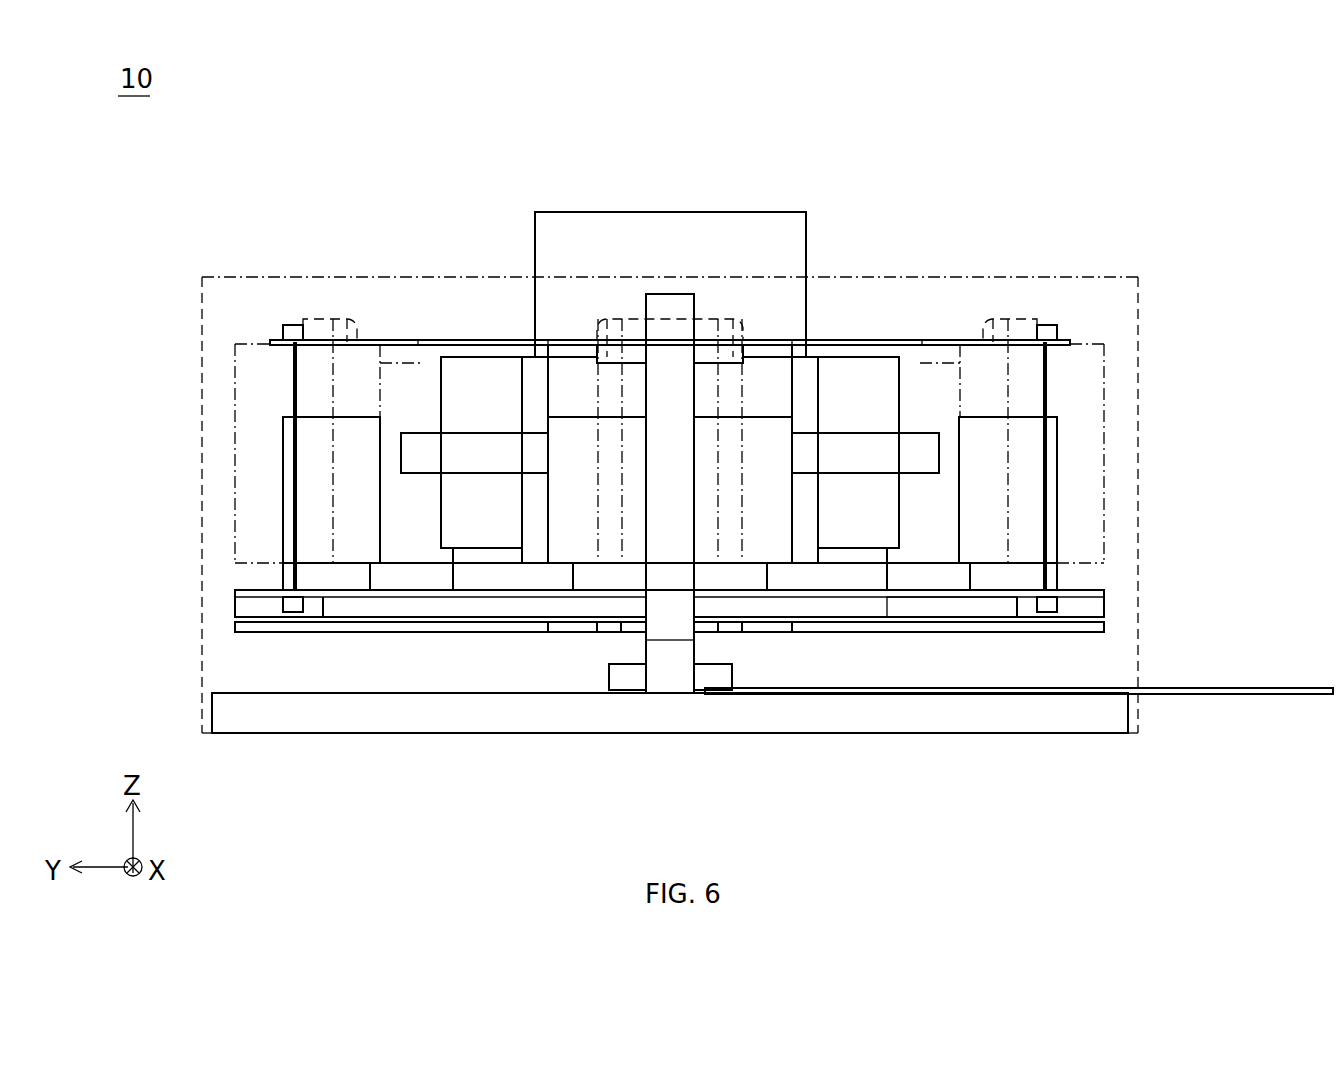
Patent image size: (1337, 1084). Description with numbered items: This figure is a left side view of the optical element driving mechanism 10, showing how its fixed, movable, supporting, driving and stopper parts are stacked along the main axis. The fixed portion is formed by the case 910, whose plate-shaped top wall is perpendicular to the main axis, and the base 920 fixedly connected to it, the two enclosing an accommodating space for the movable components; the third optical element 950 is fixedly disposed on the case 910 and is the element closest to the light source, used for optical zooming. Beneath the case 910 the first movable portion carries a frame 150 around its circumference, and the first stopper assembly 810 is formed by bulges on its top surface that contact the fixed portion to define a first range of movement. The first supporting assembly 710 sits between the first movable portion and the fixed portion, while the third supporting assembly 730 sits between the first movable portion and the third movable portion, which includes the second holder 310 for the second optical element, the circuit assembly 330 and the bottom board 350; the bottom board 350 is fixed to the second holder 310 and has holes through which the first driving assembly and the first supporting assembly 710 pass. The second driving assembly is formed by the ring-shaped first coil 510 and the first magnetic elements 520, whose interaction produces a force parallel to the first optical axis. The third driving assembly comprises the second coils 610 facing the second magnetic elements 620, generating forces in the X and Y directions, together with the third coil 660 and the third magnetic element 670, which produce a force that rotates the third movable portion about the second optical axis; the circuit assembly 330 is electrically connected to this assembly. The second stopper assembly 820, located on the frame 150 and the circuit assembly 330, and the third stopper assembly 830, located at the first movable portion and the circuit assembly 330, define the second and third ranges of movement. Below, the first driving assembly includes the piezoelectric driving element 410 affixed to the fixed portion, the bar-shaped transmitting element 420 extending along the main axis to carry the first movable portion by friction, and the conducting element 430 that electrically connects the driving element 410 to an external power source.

The optical element driving mechanism 10 is at (136, 79).
The case 910 is at (222, 277).
The third optical element 950 is at (668, 225).
The first supporting assembly 710 is at (676, 325).
The first stopper assembly 810 is at (318, 330).
The frame 150 is at (398, 357).
The second stopper assembly 820 is at (460, 357).
The first coil 510 is at (870, 448).
The third supporting assembly 730 is at (293, 370).
The first magnetic element 520 is at (331, 490).
The second magnetic element 620 is at (1008, 490).
The third magnetic element 670 is at (597, 490).
The third stopper assembly 830 is at (255, 595).
The circuit assembly 330 is at (1097, 590).
The bottom board 350 is at (1097, 630).
The second coil 610 is at (317, 578).
The base 920 is at (240, 718).
The driving element 410 is at (628, 683).
The transmitting element 420 is at (671, 677).
The third coil 660 is at (825, 578).
The second holder 310 is at (947, 607).
The conducting element 430 is at (1300, 694).